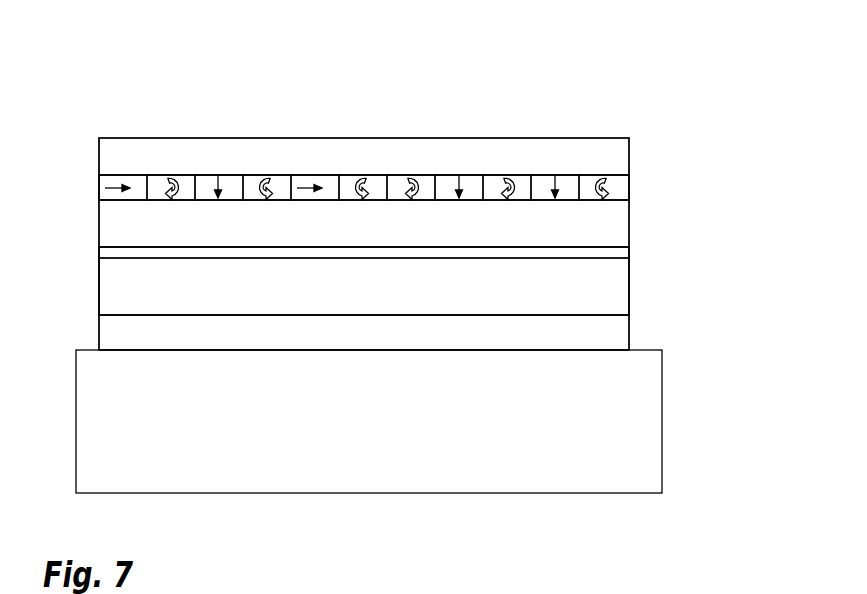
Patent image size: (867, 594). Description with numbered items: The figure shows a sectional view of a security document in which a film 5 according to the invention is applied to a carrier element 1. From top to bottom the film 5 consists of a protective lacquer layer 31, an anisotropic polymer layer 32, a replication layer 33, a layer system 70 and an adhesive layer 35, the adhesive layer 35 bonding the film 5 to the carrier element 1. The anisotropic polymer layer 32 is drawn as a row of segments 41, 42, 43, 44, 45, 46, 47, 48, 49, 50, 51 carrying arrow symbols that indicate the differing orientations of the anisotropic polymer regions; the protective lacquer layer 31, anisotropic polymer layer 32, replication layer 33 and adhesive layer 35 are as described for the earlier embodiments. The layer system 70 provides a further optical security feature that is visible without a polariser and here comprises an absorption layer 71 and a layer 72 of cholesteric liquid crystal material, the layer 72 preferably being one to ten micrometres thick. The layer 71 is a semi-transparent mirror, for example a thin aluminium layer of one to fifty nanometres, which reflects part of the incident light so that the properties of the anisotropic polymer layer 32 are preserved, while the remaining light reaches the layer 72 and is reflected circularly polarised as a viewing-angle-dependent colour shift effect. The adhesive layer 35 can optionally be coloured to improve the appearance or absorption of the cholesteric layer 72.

The carrier element 1 is at (310, 486).
The film 5 is at (92, 140).
The protective lacquer layer 31 is at (620, 158).
The anisotropic polymer layer 32 is at (620, 185).
The replication layer 33 is at (615, 215).
The adhesive layer 35 is at (613, 337).
The domain segment 41 is at (123, 176).
The domain segment 42 is at (183, 175).
The domain segment 43 is at (233, 176).
The domain segment 44 is at (278, 175).
The domain segment 45 is at (330, 176).
The domain segment 46 is at (370, 176).
The domain segment 47 is at (427, 176).
The domain segment 48 is at (470, 176).
The domain segment 49 is at (525, 176).
The domain segment 50 is at (548, 172).
The domain segment 51 is at (615, 175).
The layer system 70 is at (629, 245).
The absorption layer 71 is at (603, 253).
The layer of cholesteric liquid crystal material 72 is at (615, 300).